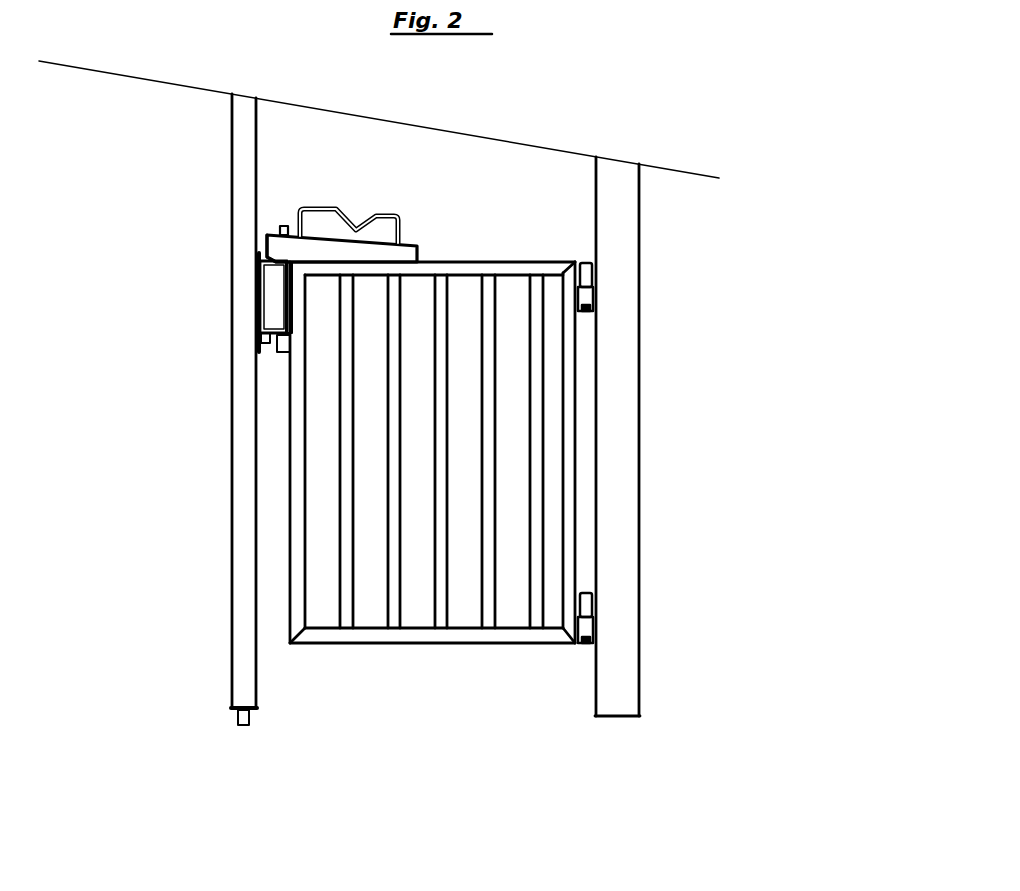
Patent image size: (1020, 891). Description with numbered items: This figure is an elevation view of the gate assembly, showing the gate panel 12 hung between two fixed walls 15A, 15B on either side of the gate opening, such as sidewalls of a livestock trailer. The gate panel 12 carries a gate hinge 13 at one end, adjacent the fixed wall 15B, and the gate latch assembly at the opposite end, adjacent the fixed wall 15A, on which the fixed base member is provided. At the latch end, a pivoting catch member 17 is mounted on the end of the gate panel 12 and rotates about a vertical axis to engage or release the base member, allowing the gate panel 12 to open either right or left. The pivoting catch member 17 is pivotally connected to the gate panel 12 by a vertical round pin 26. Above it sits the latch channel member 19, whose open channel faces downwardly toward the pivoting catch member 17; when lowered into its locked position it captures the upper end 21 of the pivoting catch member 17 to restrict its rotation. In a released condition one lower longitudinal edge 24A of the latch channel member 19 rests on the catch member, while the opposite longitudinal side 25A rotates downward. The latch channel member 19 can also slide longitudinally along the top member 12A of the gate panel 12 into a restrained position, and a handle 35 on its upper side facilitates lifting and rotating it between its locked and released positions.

The gate panel 12 is at (520, 424).
The top member 12A is at (476, 262).
The gate hinge 13 is at (586, 296).
The fixed wall 15A is at (241, 436).
The fixed wall 15B is at (632, 398).
The pivoting catch member 17 is at (270, 298).
The latch channel member 19 is at (310, 243).
The upper end 21 is at (273, 268).
The lower longitudinal edge 24A is at (270, 254).
The longitudinal side 25A is at (283, 252).
The round pin 26 is at (282, 225).
The handle 35 is at (341, 210).